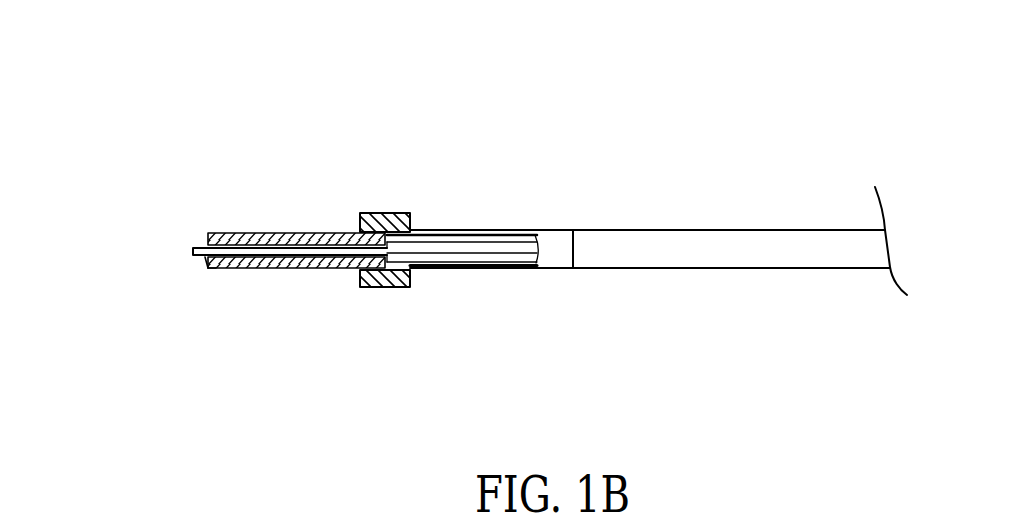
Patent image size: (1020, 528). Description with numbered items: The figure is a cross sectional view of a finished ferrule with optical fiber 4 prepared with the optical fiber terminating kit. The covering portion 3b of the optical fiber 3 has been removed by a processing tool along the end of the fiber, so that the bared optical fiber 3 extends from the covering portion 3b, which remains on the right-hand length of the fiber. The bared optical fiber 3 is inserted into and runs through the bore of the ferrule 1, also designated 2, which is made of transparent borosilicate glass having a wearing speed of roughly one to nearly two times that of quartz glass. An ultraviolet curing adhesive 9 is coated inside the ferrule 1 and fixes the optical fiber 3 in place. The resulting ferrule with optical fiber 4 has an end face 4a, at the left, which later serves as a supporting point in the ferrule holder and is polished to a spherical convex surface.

The ferrule 1 is at (296, 154).
The ferrule 2 is at (322, 231).
The optical fiber 3 is at (195, 240).
The covering portion 3b is at (758, 240).
The ferrule with optical fiber 4 is at (405, 213).
The end face 4a is at (208, 267).
The adhesive 9 is at (208, 258).